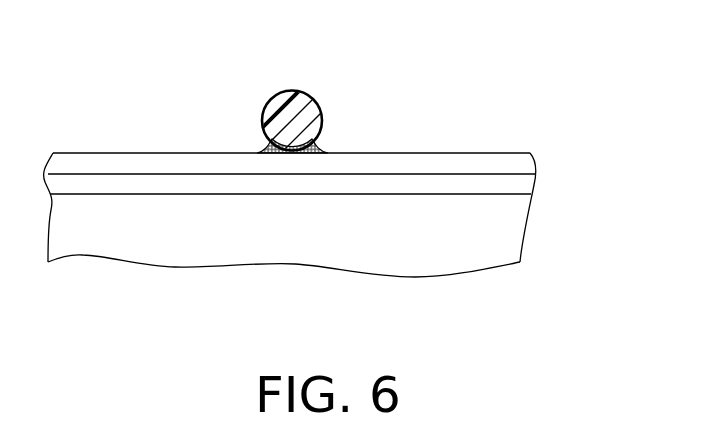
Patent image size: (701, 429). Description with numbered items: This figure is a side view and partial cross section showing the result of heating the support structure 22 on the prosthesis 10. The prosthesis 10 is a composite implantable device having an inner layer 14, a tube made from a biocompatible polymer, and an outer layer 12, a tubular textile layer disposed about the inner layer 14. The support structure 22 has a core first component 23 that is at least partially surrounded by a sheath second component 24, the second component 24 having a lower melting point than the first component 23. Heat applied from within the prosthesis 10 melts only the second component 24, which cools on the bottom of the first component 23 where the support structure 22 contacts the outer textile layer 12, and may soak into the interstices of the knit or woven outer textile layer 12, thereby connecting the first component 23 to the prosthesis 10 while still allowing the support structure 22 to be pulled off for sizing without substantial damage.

The prosthesis 10 is at (350, 194).
The outer layer 12 is at (507, 160).
The inner layer 14 is at (520, 185).
The support structure 22 is at (315, 106).
The first component 23 is at (278, 113).
The second component 24 is at (322, 151).